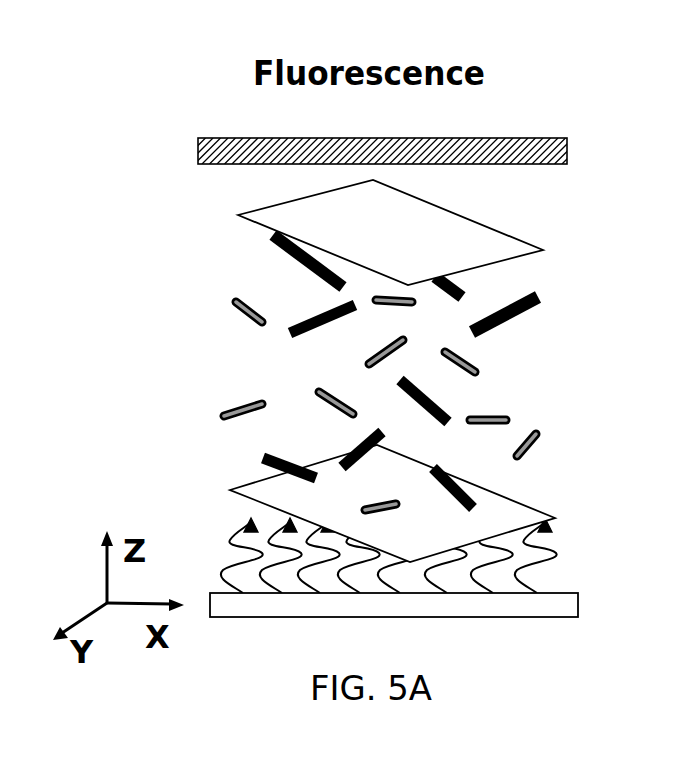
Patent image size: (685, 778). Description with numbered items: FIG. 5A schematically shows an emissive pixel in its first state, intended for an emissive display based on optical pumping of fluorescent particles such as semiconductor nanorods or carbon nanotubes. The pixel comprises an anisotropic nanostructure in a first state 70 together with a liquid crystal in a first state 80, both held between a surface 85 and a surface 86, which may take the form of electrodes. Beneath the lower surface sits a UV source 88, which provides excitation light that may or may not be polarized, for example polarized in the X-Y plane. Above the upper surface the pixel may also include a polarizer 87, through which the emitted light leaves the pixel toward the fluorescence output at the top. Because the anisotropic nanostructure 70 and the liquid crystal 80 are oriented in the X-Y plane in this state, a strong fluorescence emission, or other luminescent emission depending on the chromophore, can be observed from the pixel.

The polarizer 87 is at (592, 175).
The surface 85 is at (532, 237).
The anisotropic nanostructure in a first state 70 is at (530, 310).
The liquid crystal in a first state 80 is at (537, 437).
The surface 86 is at (530, 505).
The UV source 88 is at (605, 605).